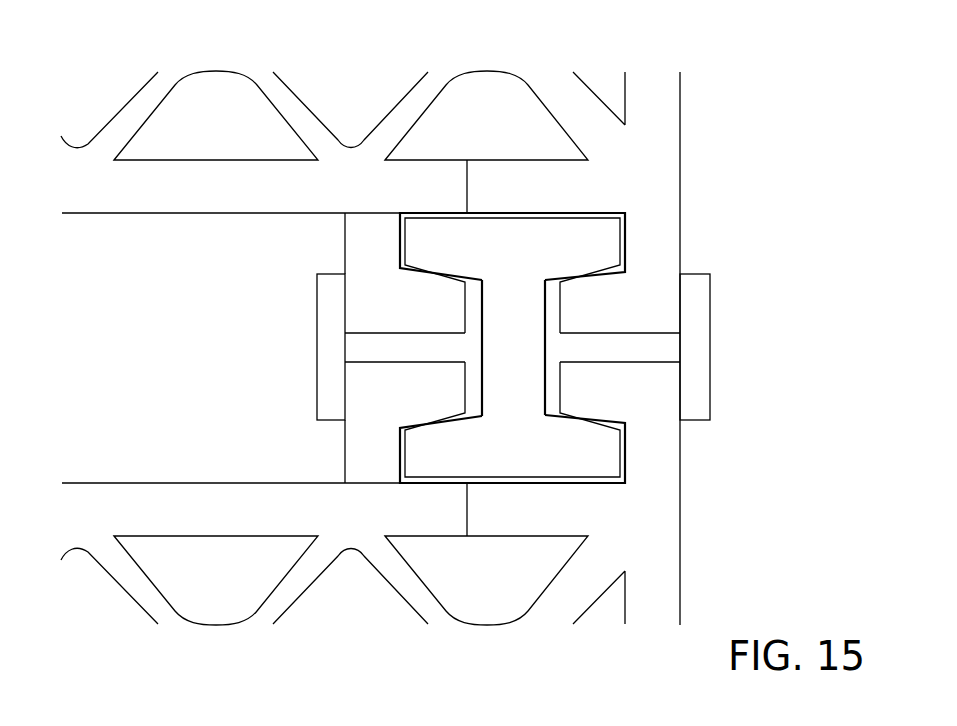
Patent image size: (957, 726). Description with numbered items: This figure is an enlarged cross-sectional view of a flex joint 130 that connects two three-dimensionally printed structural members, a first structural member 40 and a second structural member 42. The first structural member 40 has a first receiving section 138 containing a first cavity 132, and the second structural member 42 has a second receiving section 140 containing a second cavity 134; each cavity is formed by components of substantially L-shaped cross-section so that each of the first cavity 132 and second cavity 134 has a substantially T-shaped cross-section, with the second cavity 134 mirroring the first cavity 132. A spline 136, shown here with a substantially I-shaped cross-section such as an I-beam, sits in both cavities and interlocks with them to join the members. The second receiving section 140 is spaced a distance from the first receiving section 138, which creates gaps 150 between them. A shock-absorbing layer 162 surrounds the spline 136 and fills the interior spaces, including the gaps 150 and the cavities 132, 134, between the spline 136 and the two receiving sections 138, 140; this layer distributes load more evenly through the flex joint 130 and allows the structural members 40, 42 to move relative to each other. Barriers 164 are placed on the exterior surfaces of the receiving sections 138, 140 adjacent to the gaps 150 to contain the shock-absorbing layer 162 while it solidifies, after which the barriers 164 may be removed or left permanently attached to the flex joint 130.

The flex joint 130 is at (733, 74).
The first structural member 40 is at (185, 180).
The second structural member 42 is at (199, 515).
The first cavity 132 is at (397, 243).
The second cavity 134 is at (397, 455).
The spline 136 is at (532, 357).
The first receiving section 138 is at (318, 260).
The second receiving section 140 is at (318, 438).
The gaps 150 is at (420, 348).
The shock-absorbing layer 162 is at (585, 347).
The barriers 164 is at (323, 372).